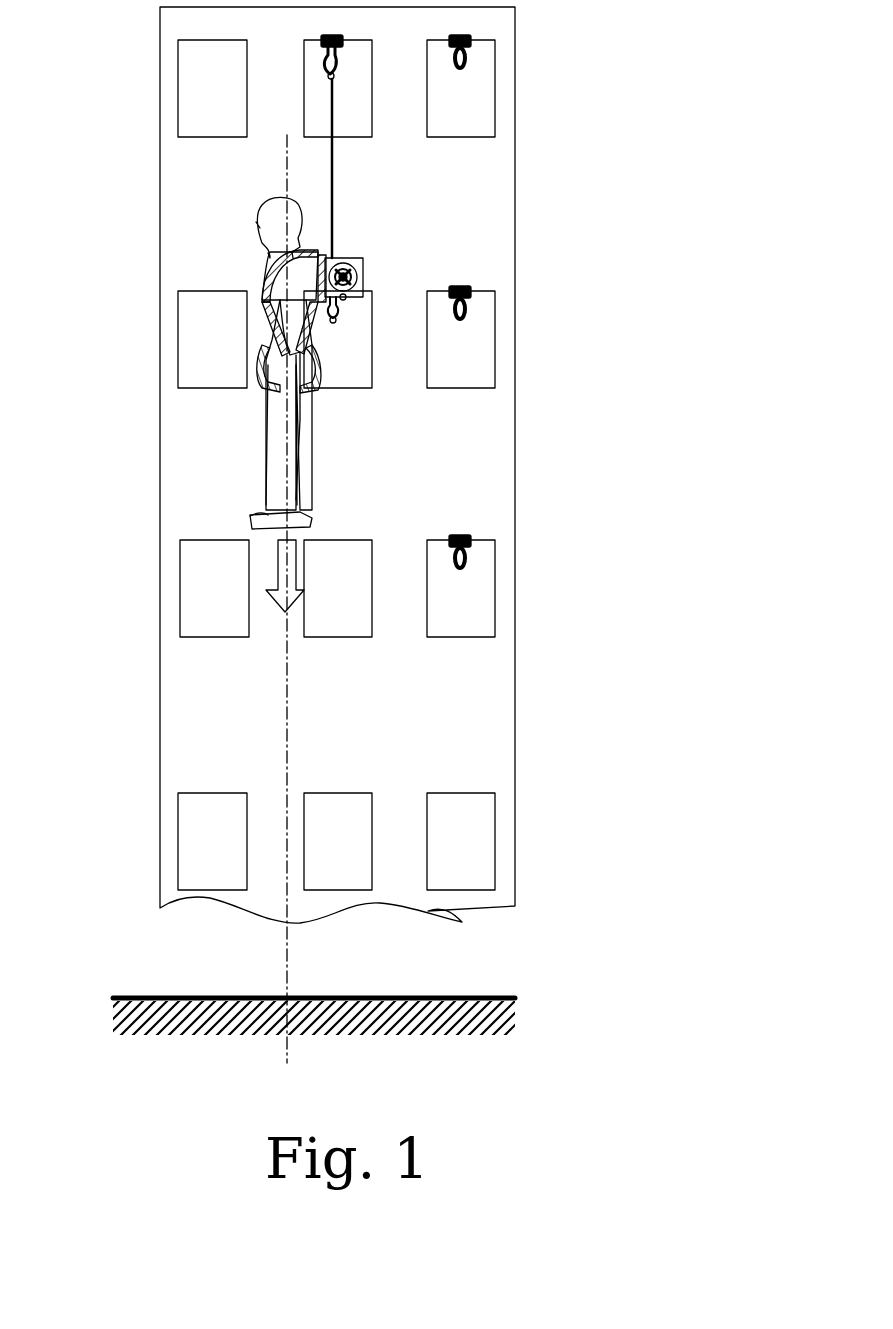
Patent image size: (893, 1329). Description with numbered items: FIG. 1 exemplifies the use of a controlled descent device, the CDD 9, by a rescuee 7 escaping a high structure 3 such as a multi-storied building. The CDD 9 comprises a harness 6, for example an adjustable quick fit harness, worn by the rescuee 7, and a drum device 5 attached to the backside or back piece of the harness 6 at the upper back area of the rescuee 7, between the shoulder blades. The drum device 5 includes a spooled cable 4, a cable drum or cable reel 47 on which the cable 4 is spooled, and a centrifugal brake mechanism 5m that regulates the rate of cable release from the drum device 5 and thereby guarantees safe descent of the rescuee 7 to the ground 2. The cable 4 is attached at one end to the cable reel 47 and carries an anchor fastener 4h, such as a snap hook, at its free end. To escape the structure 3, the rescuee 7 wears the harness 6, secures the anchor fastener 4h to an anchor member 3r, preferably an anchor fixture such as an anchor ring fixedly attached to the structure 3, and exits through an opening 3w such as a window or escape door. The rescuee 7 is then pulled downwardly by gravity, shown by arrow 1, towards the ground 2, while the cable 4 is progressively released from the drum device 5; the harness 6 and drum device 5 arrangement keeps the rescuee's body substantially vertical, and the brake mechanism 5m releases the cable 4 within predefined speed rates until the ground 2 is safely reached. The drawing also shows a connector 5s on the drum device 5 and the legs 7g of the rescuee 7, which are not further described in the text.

The arrow 1 is at (293, 584).
The ground 2 is at (140, 998).
The structure 3 is at (515, 190).
The opening 3w is at (314, 98).
The anchor member 3r is at (344, 35).
The cable 4 is at (333, 192).
The anchor fastener 4h is at (337, 74).
The drum device 5 is at (363, 266).
The centrifugal brake mechanism 5m is at (352, 279).
The descender connector 5s is at (336, 312).
The harness 6 is at (265, 298).
The rescuee 7 is at (290, 280).
The leg of person 7g is at (285, 458).
The CDD 9 is at (317, 215).
The cable drum 47 is at (348, 297).